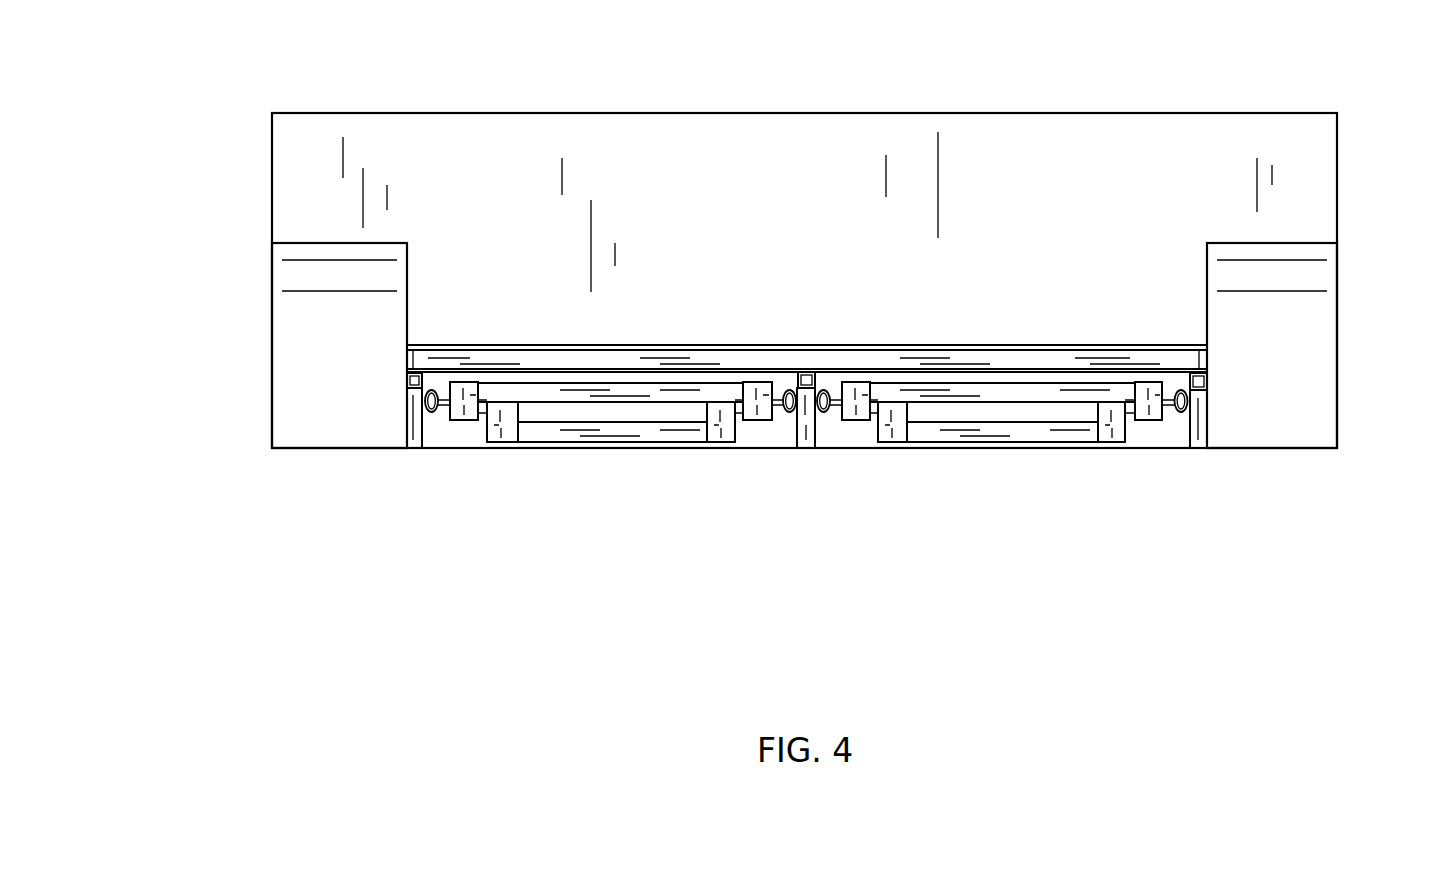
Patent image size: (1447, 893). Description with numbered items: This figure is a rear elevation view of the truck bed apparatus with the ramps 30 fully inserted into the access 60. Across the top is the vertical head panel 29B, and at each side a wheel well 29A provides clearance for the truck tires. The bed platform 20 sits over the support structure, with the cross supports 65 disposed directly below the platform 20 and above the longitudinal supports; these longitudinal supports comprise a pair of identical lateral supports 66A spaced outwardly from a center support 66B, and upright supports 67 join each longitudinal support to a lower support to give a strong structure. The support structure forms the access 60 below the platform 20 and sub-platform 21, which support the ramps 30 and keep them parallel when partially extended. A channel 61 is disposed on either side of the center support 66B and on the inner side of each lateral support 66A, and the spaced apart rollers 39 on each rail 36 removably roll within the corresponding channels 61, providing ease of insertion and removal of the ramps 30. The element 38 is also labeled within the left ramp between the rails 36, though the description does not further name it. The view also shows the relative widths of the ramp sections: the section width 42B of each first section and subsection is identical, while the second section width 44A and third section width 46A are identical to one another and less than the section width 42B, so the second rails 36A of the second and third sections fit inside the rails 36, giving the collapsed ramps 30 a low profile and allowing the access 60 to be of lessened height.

The vertical head panel 29B is at (607, 113).
The wheel well 29A is at (300, 243).
The bed platform 20 is at (807, 309).
The cross support 65 is at (631, 362).
The lateral support 66A is at (407, 380).
The center support 66B is at (807, 380).
The upright support 67 is at (412, 445).
The channel 61 is at (829, 404).
The roller 39 is at (432, 413).
The rail 36 is at (455, 422).
The second rail 36A is at (507, 432).
The upper plate 38 is at (610, 464).
The sub-platform 21 is at (1148, 440).
The extendable ramp 30 is at (836, 535).
The access 60 is at (1046, 461).
The second section width 44A is at (601, 535).
The third section width 46A is at (601, 535).
The section width 42B is at (1046, 535).